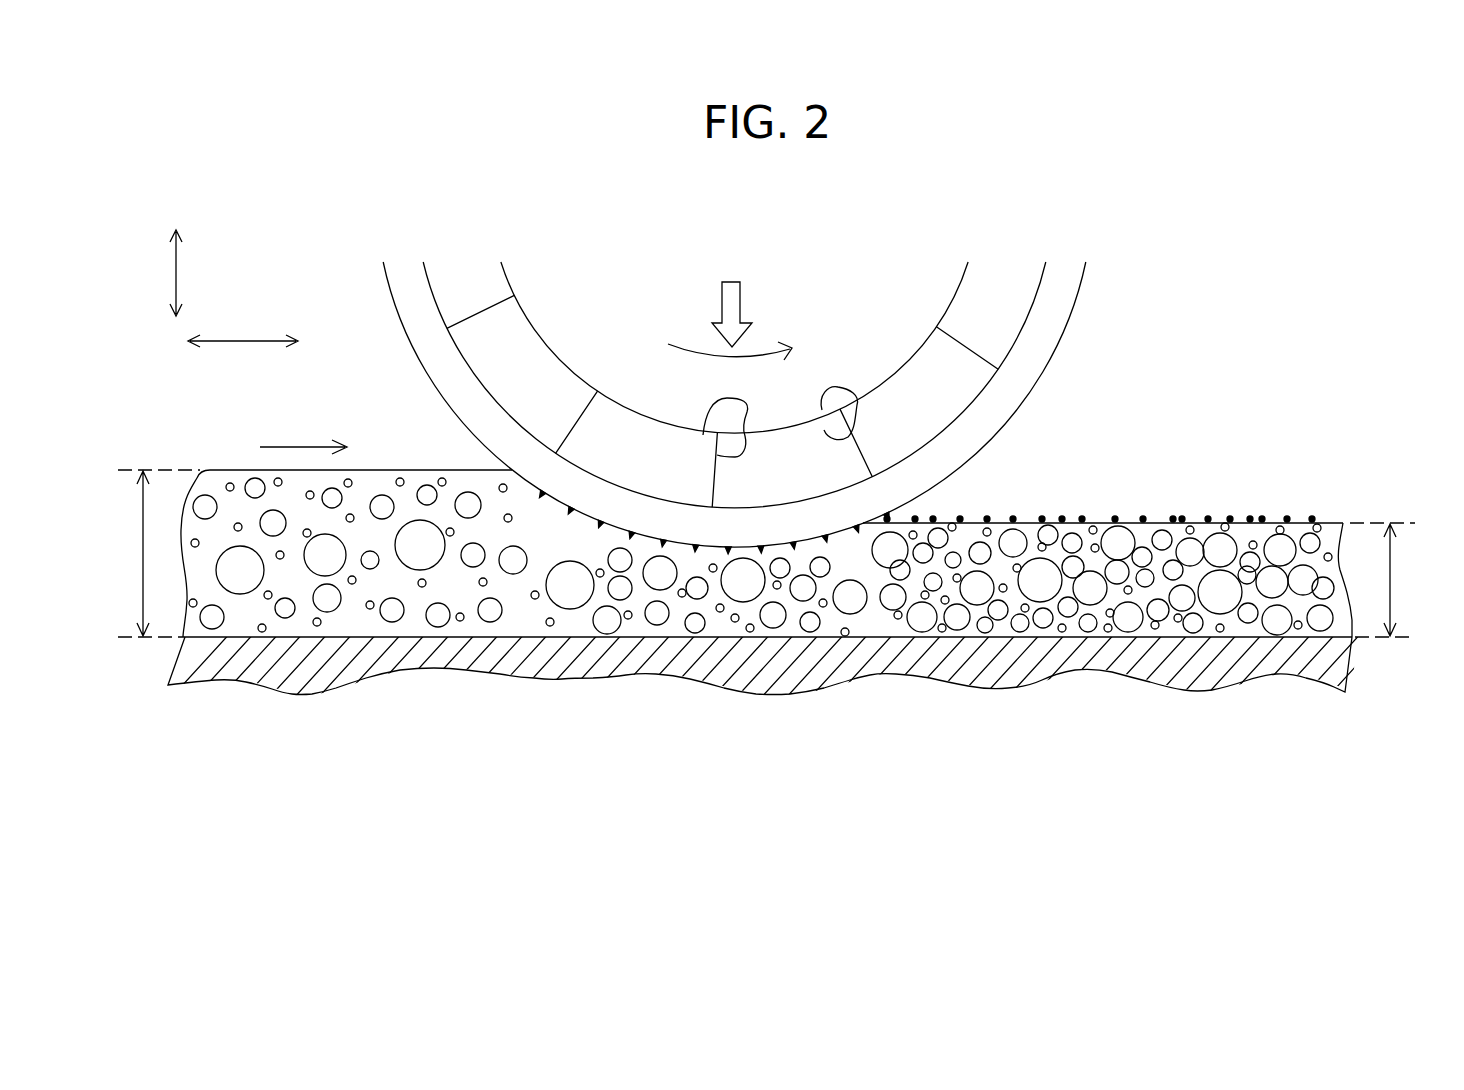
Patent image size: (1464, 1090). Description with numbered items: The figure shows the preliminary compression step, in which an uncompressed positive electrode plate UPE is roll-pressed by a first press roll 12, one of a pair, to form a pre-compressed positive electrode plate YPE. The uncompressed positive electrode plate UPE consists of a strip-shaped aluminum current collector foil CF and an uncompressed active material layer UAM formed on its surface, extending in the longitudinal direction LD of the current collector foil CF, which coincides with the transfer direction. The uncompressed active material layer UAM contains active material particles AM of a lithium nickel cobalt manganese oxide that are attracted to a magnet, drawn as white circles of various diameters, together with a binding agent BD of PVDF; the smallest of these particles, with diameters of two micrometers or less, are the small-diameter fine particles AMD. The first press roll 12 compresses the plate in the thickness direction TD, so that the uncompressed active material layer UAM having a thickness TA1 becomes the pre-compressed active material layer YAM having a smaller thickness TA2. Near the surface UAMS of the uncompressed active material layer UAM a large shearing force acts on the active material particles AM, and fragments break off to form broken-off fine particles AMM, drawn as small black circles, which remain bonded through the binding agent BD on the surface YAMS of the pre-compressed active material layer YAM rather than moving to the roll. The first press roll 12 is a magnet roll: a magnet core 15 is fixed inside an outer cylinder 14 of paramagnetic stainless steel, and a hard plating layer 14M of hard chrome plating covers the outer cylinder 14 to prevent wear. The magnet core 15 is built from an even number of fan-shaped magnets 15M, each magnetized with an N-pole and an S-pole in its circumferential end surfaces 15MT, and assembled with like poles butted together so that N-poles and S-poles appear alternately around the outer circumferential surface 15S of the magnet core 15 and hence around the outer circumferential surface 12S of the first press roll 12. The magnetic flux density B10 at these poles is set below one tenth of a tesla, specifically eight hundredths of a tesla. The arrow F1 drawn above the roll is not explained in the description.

The first press roll 12 is at (1165, 290).
The outer circumferential surface of first press roll 12S is at (384, 279).
The outer cylinder 14 is at (1040, 346).
The hard plating layer 14M is at (1038, 384).
The magnet core 15 is at (1010, 292).
The fan-shaped magnet 15M is at (620, 404).
The end surface of magnet 15MT is at (832, 388).
The outer circumferential surface of magnet core 15S is at (917, 456).
The magnetic flux density B10 is at (400, 318).
The force direction F1 is at (740, 298).
The thickness direction TD is at (195, 273).
The longitudinal direction LD is at (243, 326).
The surface of uncompressed active material layer UAMS is at (224, 470).
The uncompressed active material layer UAM is at (355, 620).
The small-diameter fine particles AMD is at (450, 532).
The active material particles AM is at (565, 600).
The broken-off fine particles AMM is at (762, 560).
The surface of pre-compressed active material layer YAMS is at (1215, 522).
The pre-compressed active material layer YAM is at (1145, 632).
The current collector foil CF is at (273, 668).
The binding agent BD is at (390, 582).
The uncompressed positive electrode plate UPE is at (393, 788).
The pre-compressed positive electrode plate YPE is at (1178, 788).
The thickness of uncompressed active material layer TA1 is at (116, 553).
The thickness of pre-compressed active material layer TA2 is at (1401, 580).